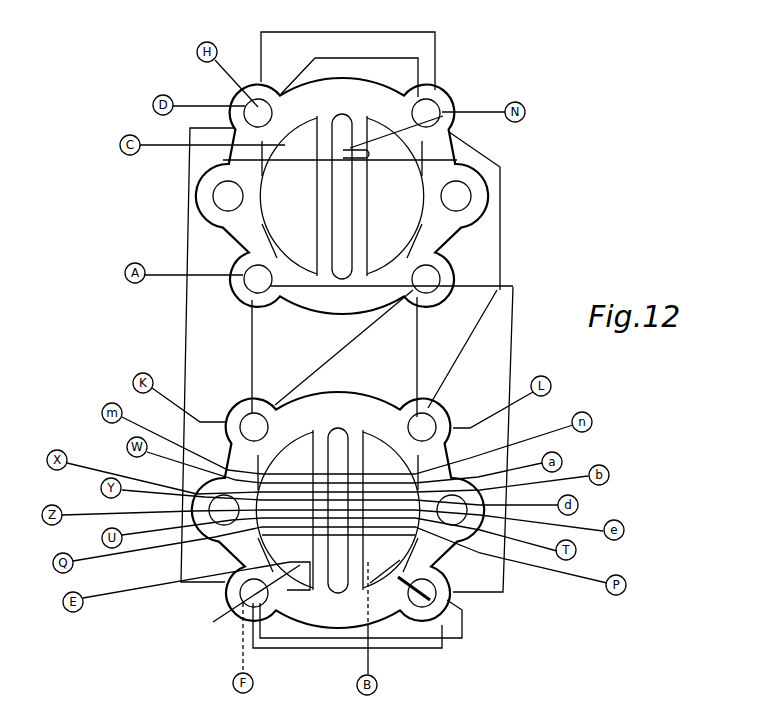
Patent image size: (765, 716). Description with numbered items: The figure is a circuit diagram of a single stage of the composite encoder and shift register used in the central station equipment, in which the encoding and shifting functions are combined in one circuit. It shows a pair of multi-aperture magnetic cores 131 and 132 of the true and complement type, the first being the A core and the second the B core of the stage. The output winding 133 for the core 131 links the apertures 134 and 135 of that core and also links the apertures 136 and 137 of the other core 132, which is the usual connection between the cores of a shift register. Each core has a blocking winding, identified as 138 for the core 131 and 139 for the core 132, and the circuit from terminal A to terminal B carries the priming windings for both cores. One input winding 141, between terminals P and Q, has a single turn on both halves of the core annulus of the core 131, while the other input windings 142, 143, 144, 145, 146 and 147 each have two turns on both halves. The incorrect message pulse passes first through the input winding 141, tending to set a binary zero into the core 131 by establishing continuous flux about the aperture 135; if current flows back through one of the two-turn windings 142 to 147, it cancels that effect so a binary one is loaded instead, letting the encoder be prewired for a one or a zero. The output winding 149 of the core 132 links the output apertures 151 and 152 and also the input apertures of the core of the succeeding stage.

The core 131 is at (339, 388).
The core 132 is at (449, 254).
The output winding 133 is at (462, 623).
The aperture 134 is at (236, 601).
The aperture 135 is at (437, 578).
The aperture 136 is at (245, 266).
The aperture 137 is at (438, 297).
The blocking winding 138 is at (148, 588).
The blocking winding 139 is at (178, 148).
The input winding 141 is at (552, 568).
The input winding 142 is at (523, 542).
The input winding 143 is at (560, 525).
The input winding 144 is at (530, 503).
The input winding 145 is at (553, 480).
The input winding 146 is at (520, 467).
The input winding 147 is at (520, 442).
The output winding 149 is at (355, 33).
The output aperture 151 is at (265, 100).
The output aperture 152 is at (427, 100).